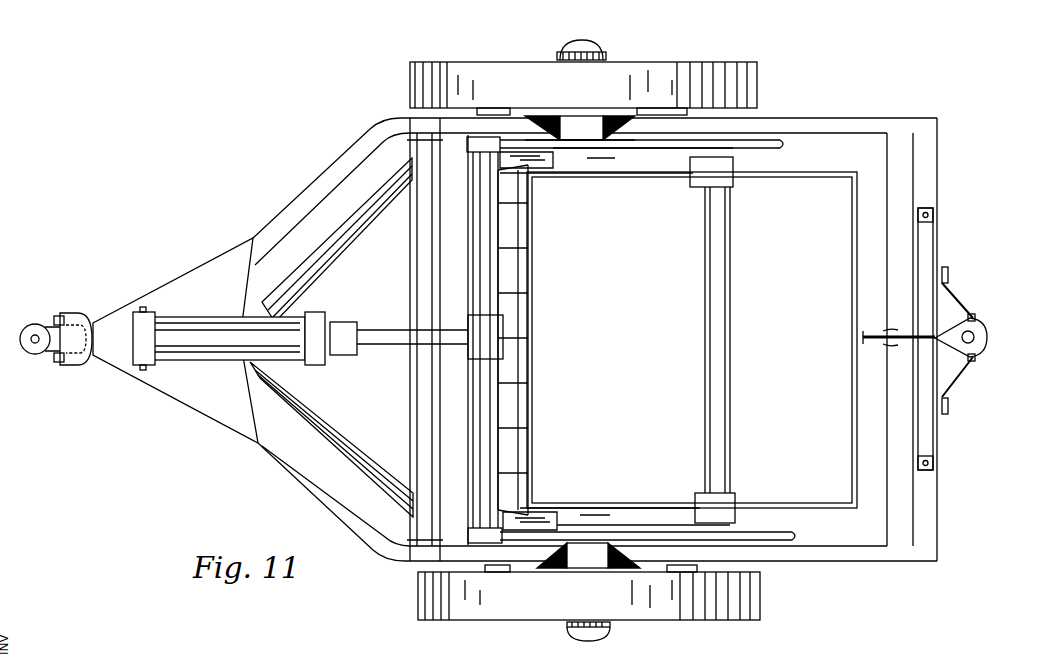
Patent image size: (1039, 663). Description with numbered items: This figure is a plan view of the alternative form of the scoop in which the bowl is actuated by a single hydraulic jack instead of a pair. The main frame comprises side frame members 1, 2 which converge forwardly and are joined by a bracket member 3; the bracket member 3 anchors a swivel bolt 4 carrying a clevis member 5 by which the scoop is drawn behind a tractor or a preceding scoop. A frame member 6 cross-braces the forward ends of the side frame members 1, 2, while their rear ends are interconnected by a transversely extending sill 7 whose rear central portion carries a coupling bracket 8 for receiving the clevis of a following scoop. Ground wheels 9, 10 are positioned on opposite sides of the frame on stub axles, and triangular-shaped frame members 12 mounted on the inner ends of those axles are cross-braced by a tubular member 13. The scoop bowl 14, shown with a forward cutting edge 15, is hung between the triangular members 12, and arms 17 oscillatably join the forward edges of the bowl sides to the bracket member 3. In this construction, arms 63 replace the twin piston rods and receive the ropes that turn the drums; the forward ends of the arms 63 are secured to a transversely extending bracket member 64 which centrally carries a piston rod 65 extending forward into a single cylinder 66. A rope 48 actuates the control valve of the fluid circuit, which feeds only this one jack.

The side frame member 1 is at (866, 558).
The side frame member 2 is at (826, 118).
The bracket member 3 is at (190, 396).
The swivel bolt 4 is at (87, 357).
The clevis member 5 is at (30, 324).
The frame member 6 is at (411, 401).
The sill 7 is at (935, 192).
The coupling bracket 8 is at (980, 356).
The ground wheel 9 is at (545, 598).
The ground wheel 10 is at (510, 72).
The triangular-shaped frame member 12 is at (627, 166).
The tubular member 13 is at (708, 412).
The scoop bowl 14 is at (843, 492).
The cutting edge 15 is at (510, 402).
The arm 17 is at (386, 210).
The rope 48 is at (871, 347).
The arm 63 is at (667, 148).
The transversely extending bracket member 64 is at (484, 287).
The piston rod 65 is at (375, 328).
The cylinder 66 is at (213, 318).